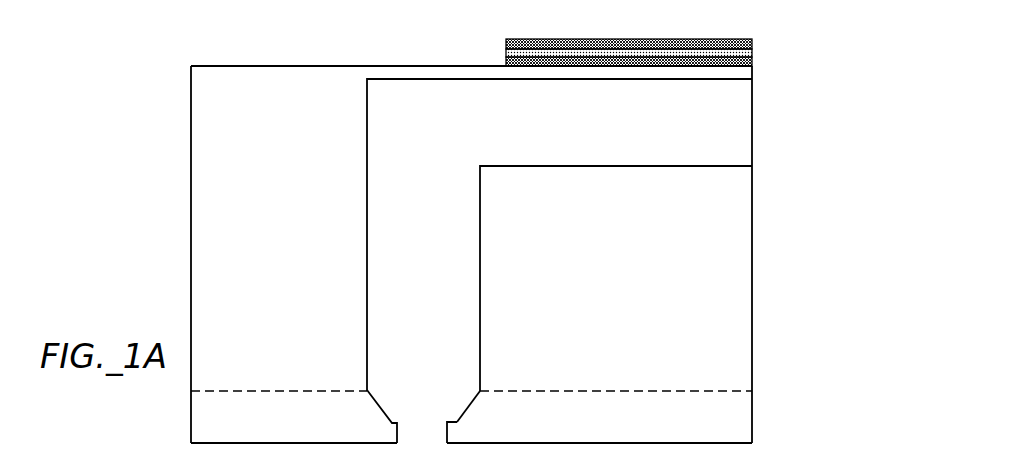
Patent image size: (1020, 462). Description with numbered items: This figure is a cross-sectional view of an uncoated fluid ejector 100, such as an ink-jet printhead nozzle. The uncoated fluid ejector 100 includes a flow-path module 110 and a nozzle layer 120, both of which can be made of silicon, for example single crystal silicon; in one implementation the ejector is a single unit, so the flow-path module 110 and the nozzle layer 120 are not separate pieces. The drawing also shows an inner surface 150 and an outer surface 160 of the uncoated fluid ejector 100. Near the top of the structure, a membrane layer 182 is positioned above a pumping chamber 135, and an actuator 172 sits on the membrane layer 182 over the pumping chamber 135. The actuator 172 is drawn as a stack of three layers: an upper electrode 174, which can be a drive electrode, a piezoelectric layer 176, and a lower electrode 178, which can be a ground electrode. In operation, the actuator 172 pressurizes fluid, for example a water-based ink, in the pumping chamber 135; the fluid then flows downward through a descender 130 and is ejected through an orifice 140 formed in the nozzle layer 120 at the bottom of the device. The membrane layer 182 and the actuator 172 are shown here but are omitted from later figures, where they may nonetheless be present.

The uncoated fluid ejector 100 is at (126, 50).
The flow-path module 110 is at (738, 333).
The nozzle layer 120 is at (752, 418).
The descender 130 is at (446, 298).
The pumping chamber 135 is at (614, 133).
The orifice 140 is at (443, 447).
The inner surface 150 is at (460, 417).
The outer surface 160 is at (466, 440).
The actuator 172 is at (756, 40).
The upper electrode 174 is at (570, 40).
The piezoelectric layer 176 is at (505, 51).
The lower electrode 178 is at (506, 61).
The membrane layer 182 is at (752, 76).